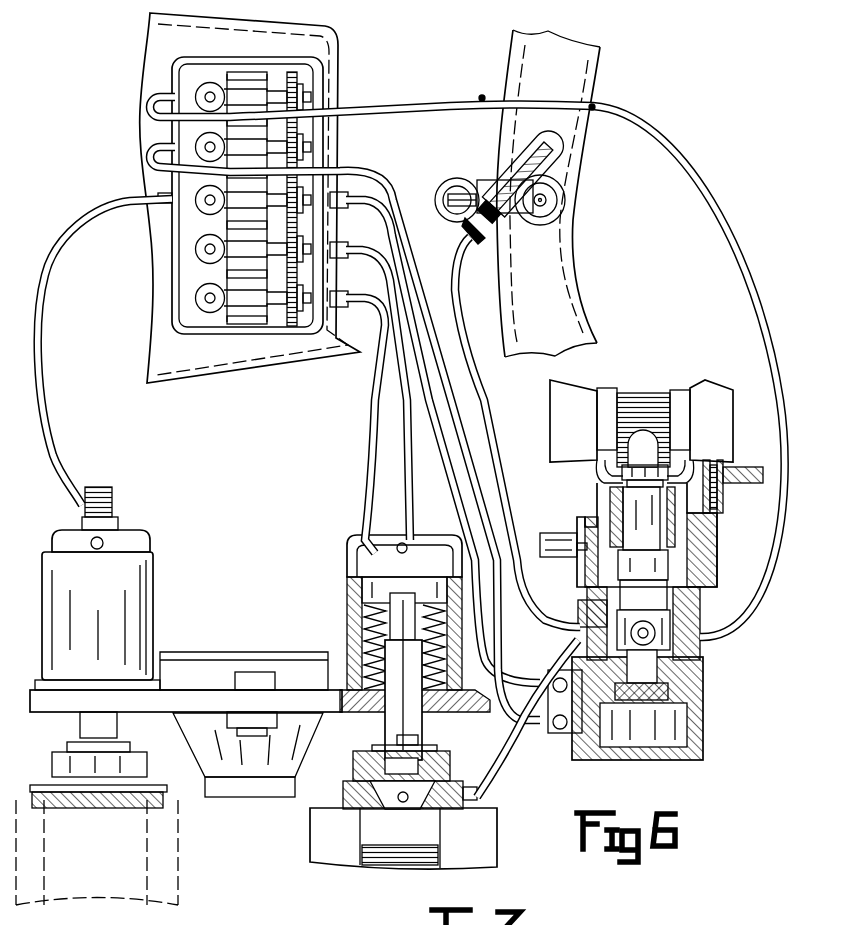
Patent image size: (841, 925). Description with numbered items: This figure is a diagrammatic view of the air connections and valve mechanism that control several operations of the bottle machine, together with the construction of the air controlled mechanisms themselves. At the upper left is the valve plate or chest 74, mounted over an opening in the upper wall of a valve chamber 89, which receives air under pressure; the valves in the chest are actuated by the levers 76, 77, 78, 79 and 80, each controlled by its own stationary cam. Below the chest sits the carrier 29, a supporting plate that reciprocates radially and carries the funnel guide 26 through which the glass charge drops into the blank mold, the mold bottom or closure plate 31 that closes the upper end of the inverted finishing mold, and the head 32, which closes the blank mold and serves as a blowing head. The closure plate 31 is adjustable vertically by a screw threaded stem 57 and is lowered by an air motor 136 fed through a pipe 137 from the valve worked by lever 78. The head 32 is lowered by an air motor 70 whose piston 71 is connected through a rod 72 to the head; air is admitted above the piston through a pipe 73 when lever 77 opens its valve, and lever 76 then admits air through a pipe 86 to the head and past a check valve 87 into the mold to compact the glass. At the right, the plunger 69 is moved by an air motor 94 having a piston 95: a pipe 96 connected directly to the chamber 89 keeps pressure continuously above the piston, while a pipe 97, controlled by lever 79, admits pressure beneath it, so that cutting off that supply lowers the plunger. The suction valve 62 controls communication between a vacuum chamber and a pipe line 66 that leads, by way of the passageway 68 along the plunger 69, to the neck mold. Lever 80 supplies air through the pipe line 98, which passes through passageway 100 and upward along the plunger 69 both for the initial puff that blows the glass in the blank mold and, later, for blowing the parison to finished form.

The valve lever 80 is at (243, 100).
The valve lever 79 is at (242, 145).
The valve lever 78 is at (240, 205).
The valve lever 77 is at (237, 250).
The valve lever 76 is at (238, 303).
The valve chamber 89 is at (202, 368).
The valve plate or chest 74 is at (293, 343).
The pipe line 98 is at (413, 100).
The valve 62 is at (555, 200).
The pipe line 66 is at (460, 282).
The pipe 137 is at (42, 352).
The screw threaded stem 57 is at (82, 488).
The air motor 136 is at (135, 563).
The pipe 73 is at (405, 402).
The pipe 86 is at (366, 437).
The pipe 96 is at (440, 452).
The pipe 97 is at (468, 483).
The plunger 69 is at (647, 508).
The passageway 68 is at (673, 563).
The passageway 100 is at (578, 612).
The piston 95 is at (680, 690).
The air motor 94 is at (690, 730).
The air motor 70 is at (348, 578).
The piston 71 is at (362, 623).
The rod 72 is at (418, 712).
The check valve 87 is at (372, 820).
The head 32 is at (440, 822).
The carrier 29 is at (210, 690).
The funnel guide 26 is at (255, 797).
The mold bottom or closure plate 31 is at (98, 805).